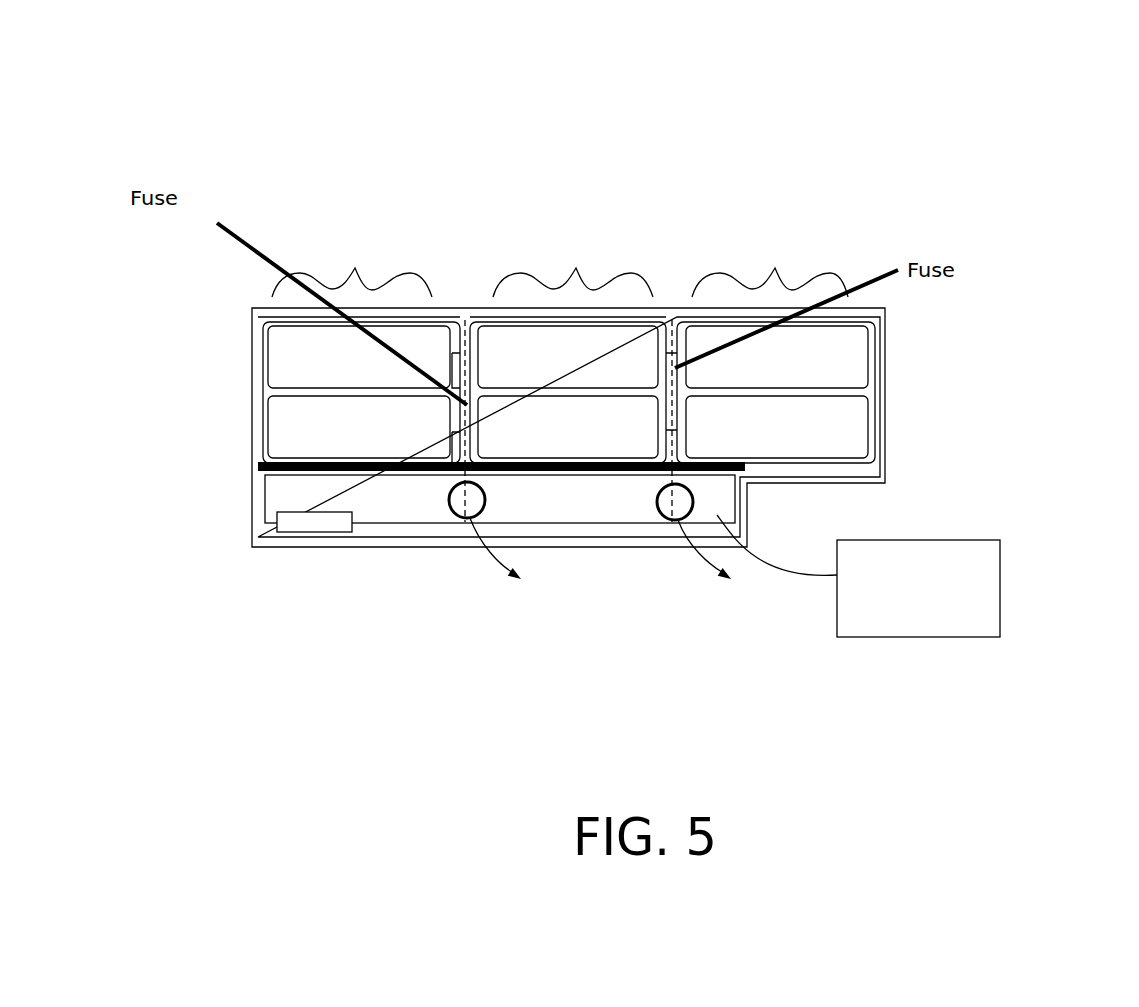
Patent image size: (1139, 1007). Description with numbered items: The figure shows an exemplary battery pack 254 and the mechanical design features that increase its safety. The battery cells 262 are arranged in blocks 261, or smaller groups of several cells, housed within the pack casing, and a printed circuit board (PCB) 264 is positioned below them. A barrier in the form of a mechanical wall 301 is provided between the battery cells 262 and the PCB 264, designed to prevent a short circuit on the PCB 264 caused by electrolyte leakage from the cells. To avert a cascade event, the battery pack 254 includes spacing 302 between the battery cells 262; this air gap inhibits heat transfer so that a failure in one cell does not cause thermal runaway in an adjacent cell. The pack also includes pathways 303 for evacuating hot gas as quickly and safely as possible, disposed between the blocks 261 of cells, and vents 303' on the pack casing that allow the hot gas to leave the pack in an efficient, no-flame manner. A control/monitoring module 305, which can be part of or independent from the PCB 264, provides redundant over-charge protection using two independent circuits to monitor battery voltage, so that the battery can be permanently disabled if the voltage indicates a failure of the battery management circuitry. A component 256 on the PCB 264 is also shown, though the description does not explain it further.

The battery pack 254 is at (895, 468).
The connector 256 is at (310, 530).
The block 261 is at (355, 268).
The battery cell 262 is at (275, 364).
The printed circuit board 264 is at (717, 494).
The mechanical wall 301 is at (396, 484).
The spacing 302 is at (301, 385).
The pathway 303 is at (763, 329).
The vent 303' is at (762, 598).
The control/monitoring module 305 is at (1000, 600).